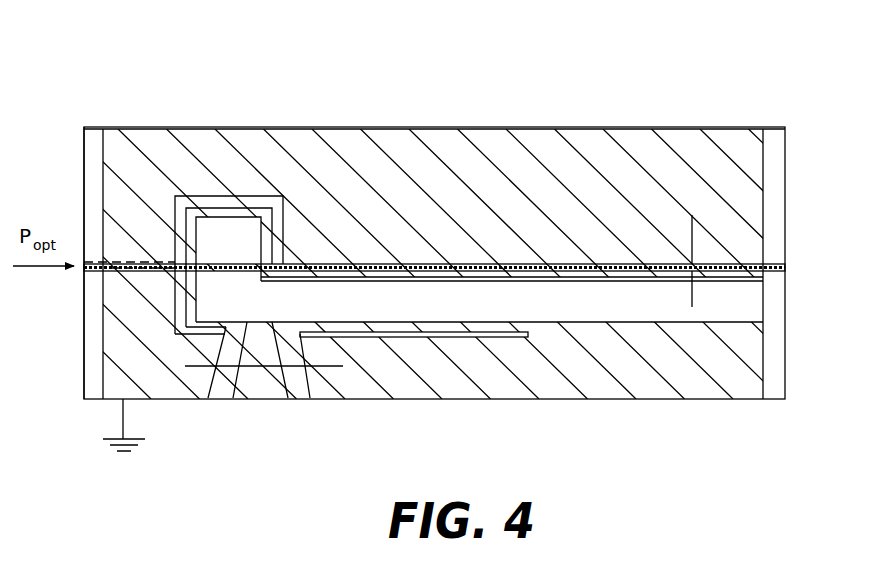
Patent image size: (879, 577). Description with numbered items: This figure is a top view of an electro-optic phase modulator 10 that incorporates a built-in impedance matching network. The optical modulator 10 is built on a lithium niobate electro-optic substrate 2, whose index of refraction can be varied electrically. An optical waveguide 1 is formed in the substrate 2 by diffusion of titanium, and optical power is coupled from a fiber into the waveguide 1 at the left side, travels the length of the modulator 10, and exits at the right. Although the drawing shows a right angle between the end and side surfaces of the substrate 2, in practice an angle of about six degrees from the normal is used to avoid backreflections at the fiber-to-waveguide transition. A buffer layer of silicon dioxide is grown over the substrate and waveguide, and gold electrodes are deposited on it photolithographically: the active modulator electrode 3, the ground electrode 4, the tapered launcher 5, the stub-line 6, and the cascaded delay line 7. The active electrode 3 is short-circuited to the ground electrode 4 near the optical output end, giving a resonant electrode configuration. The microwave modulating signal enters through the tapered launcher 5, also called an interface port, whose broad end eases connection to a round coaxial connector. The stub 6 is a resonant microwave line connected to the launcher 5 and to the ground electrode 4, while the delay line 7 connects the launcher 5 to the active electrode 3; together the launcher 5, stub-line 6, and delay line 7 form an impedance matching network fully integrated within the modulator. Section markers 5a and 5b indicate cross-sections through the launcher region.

The optical modulator 10 is at (158, 92).
The optical waveguide 1 is at (83, 271).
The electro-optic substrate 2 is at (662, 311).
The active modulator electrode 3 is at (435, 281).
The ground electrode 4 is at (612, 163).
The tapered launcher 5 is at (263, 385).
The section line 5a is at (685, 222).
The section line 5b is at (189, 360).
The stub-line 6 is at (415, 338).
The cascaded delay line 7 is at (231, 211).